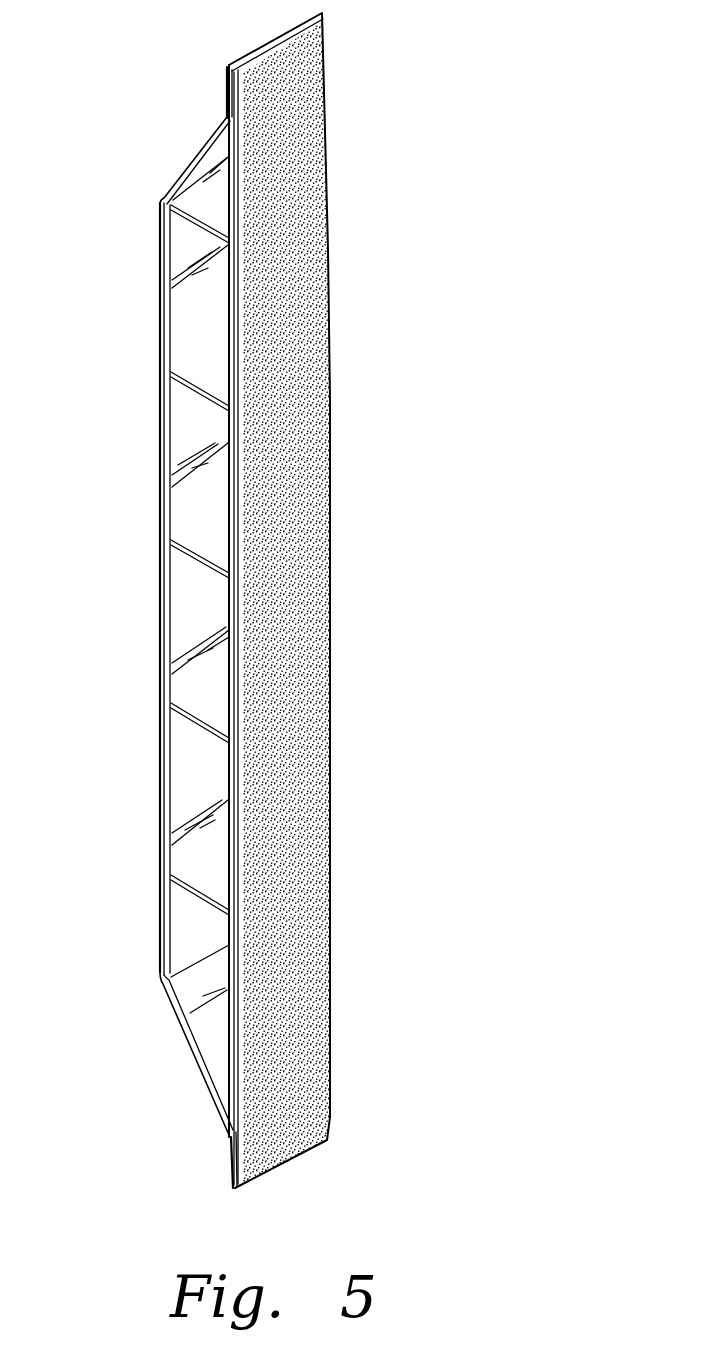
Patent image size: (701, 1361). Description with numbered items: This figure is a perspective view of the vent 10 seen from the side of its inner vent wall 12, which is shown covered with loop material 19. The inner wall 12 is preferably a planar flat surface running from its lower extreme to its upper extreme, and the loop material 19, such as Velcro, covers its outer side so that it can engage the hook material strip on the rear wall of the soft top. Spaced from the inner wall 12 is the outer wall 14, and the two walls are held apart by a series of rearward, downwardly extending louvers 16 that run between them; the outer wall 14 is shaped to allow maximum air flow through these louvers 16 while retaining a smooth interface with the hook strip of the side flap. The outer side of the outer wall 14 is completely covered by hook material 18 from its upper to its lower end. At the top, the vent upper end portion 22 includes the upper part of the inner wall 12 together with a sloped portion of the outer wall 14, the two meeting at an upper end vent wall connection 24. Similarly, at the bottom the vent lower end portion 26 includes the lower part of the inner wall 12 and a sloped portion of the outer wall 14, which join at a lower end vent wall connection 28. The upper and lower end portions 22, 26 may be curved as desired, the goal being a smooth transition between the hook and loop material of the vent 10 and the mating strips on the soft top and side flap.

The vent 10 is at (462, 211).
The inner vent wall 12 is at (232, 348).
The outer wall 14 is at (168, 283).
The louvers 16 is at (163, 204).
The hook material 18 is at (158, 592).
The loop material 19 is at (298, 567).
The vent upper end portion 22 is at (208, 153).
The upper end vent wall connection 24 is at (226, 108).
The vent lower end portion 26 is at (212, 1040).
The lower end vent wall connection 28 is at (227, 1147).